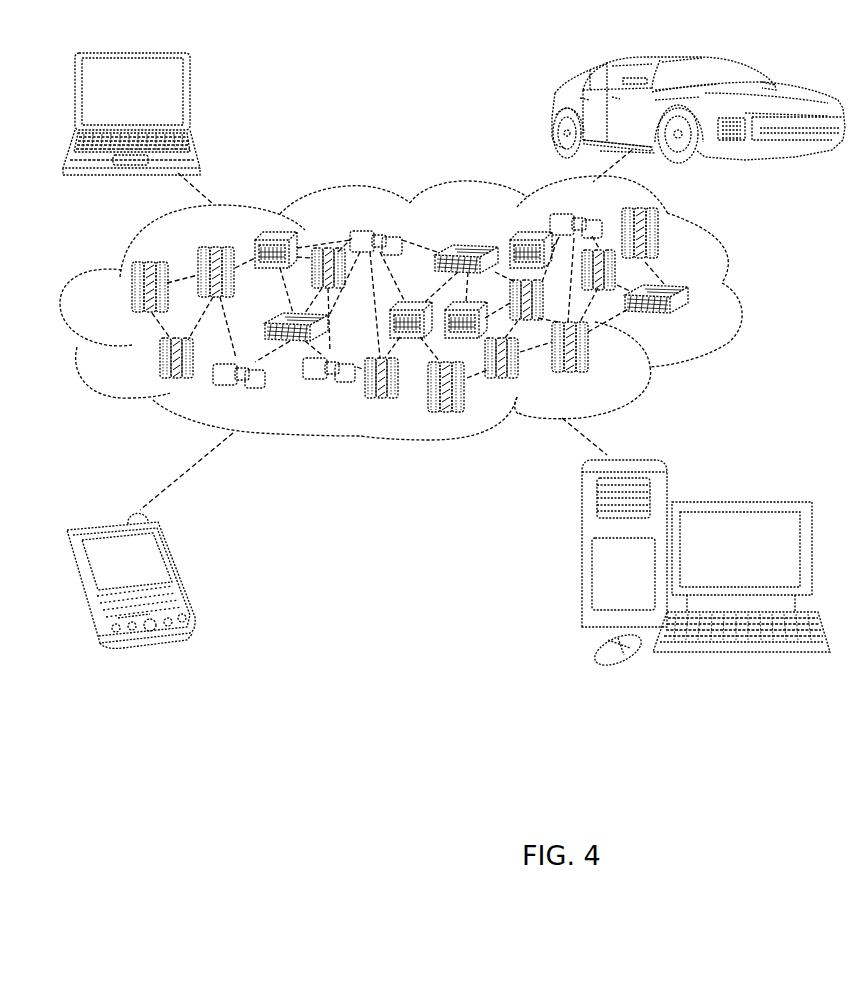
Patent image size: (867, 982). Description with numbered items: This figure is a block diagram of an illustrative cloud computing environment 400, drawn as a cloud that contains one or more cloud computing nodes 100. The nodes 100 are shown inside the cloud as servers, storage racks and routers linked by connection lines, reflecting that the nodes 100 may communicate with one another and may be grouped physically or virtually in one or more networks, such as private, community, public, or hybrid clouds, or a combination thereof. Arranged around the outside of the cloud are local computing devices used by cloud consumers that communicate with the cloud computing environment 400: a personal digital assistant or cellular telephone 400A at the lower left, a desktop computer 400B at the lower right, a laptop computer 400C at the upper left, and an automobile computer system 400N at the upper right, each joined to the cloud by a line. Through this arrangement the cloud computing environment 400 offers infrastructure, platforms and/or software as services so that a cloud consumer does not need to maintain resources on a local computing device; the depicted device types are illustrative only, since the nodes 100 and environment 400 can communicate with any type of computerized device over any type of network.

The laptop computer 400C is at (190, 98).
The automobile computer system 400N is at (557, 112).
The cloud computing environment 400 is at (738, 295).
The cloud computing nodes 100 is at (688, 317).
The personal digital assistant (PDA) or cellular telephone 400A is at (182, 568).
The desktop computer 400B is at (748, 490).